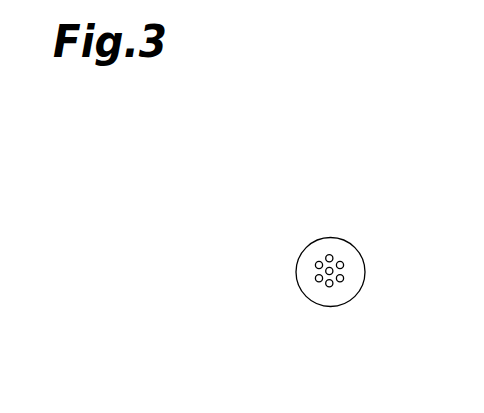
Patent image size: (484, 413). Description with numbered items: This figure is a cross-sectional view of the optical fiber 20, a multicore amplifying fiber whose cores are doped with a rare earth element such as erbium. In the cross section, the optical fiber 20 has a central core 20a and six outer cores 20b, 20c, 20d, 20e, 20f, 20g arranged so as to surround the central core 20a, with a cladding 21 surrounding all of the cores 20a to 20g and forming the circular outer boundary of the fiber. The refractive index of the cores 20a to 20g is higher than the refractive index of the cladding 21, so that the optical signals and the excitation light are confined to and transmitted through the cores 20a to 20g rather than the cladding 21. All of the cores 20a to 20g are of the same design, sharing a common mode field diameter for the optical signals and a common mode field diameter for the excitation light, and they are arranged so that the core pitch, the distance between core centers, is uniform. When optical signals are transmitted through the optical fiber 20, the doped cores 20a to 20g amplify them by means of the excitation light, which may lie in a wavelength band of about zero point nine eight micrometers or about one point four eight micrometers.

The cladding 21 is at (311, 240).
The optical fiber 20 is at (332, 238).
The central core 20a is at (326, 270).
The outer core 20b is at (331, 255).
The outer core 20c is at (344, 266).
The outer core 20d is at (344, 280).
The outer core 20e is at (330, 287).
The outer core 20f is at (316, 278).
The outer core 20g is at (317, 262).